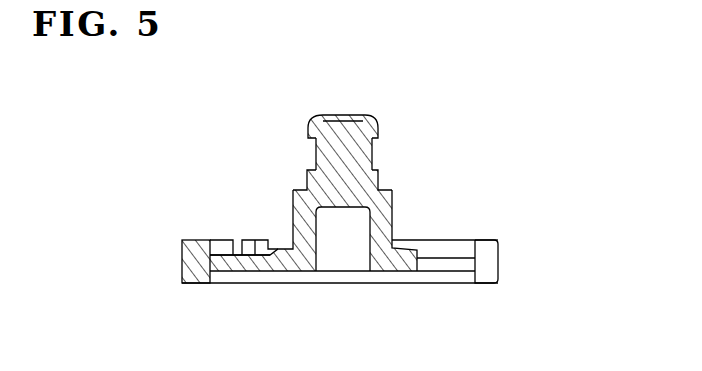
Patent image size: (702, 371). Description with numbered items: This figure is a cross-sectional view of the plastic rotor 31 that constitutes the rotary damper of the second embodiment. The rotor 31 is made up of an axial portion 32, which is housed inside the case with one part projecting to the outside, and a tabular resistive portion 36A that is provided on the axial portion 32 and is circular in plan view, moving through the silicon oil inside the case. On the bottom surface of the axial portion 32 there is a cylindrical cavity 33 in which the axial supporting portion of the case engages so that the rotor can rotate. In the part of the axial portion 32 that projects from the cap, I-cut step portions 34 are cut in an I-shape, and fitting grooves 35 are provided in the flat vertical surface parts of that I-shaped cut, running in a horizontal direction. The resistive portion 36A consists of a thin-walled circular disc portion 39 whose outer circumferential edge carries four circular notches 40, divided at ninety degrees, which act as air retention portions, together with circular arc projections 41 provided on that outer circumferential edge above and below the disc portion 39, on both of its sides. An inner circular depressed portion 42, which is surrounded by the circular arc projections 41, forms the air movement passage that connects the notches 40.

The plastic rotor 31 is at (381, 115).
The axial portion 32 is at (318, 124).
The cylindrical cavity 33 is at (333, 246).
The I-cut step portions 34 is at (307, 188).
The fitting grooves 35 is at (317, 150).
The resistive portion 36A is at (503, 237).
The thin-walled circular disc portion 39 is at (250, 262).
The circular notches 40 is at (443, 268).
The circular arc projections 41 is at (182, 273).
The inner circular depressed portion 42 is at (222, 243).